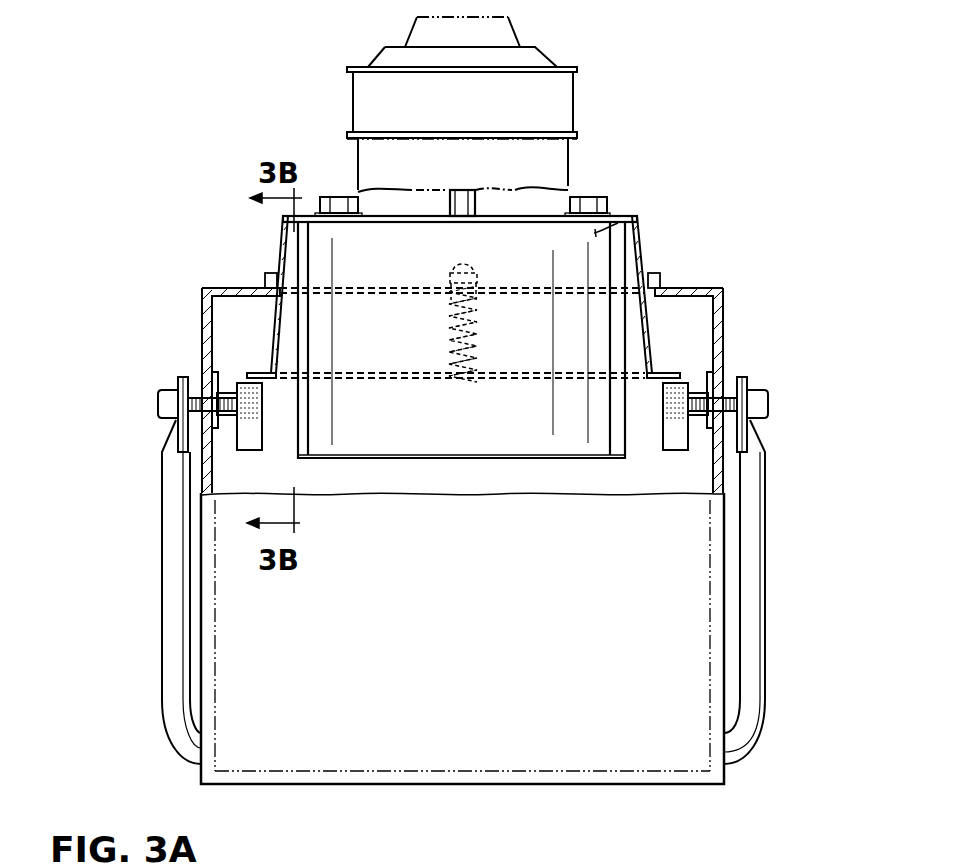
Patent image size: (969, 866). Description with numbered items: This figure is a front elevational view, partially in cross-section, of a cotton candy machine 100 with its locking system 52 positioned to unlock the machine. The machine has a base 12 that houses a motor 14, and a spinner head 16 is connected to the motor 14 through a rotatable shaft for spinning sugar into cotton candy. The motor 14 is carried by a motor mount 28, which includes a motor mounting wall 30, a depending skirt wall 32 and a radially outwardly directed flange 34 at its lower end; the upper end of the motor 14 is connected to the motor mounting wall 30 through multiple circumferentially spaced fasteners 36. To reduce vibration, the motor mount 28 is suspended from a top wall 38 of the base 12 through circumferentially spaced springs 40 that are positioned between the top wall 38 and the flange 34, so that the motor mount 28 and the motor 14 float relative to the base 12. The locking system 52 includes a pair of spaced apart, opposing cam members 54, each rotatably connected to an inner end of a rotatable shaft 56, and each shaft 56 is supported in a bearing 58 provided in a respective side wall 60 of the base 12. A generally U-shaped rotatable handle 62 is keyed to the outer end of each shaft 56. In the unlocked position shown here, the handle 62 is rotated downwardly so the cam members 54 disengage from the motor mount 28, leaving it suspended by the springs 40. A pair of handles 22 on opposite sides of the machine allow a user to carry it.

The cotton candy machine 100 is at (770, 163).
The spinner head 16 is at (375, 63).
The motor mounting wall 30 is at (308, 214).
The fasteners 36 is at (357, 197).
The motor mount 28 is at (283, 254).
The motor 14 is at (630, 215).
The depending skirt wall 32 is at (300, 267).
The radially outwardly directed flange 34 is at (254, 374).
The springs 40 is at (445, 324).
The side wall 60 is at (200, 310).
The top wall 38 is at (218, 289).
The bearing 58 is at (203, 348).
The locking system 52 is at (790, 378).
The cam members 54 is at (262, 433).
The rotatable shaft 56 is at (224, 430).
The base 12 is at (200, 645).
The handles 22 is at (162, 547).
The rotatable handle 62 is at (766, 655).